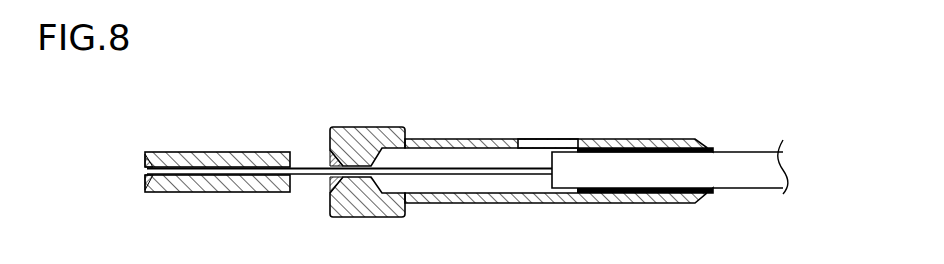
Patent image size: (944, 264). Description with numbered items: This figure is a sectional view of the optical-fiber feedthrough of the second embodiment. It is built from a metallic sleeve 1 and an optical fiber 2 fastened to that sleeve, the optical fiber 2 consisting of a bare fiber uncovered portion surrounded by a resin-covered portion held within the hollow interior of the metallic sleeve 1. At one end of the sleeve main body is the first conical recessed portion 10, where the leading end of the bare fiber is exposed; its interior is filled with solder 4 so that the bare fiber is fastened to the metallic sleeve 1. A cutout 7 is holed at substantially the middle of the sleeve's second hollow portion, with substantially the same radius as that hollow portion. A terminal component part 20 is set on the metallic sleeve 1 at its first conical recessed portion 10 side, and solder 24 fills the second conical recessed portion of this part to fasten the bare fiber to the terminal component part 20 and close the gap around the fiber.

The metallic sleeve 1 is at (457, 131).
The optical fiber 2 is at (740, 144).
The solder 4 is at (329, 186).
The cutout 7 is at (538, 142).
The first conical recessed portion 10 is at (346, 146).
The terminal component part 20 is at (229, 152).
The solder 24 is at (144, 163).